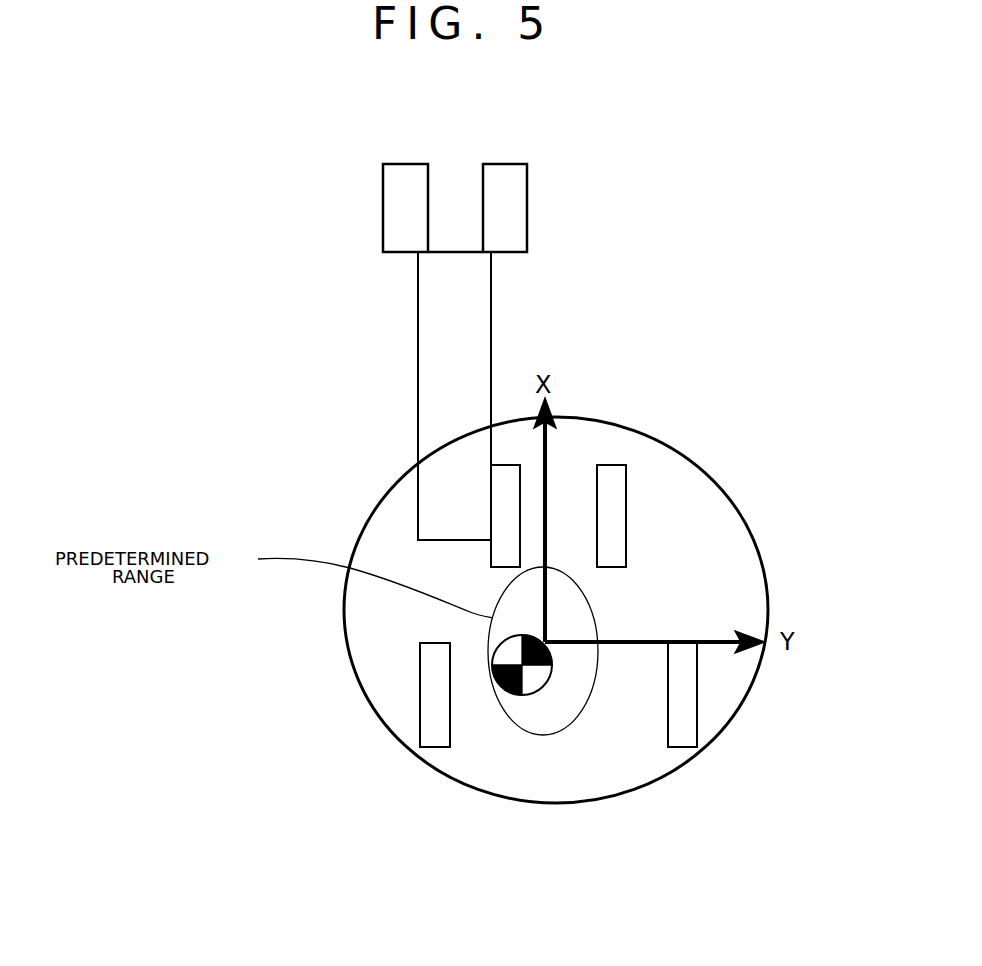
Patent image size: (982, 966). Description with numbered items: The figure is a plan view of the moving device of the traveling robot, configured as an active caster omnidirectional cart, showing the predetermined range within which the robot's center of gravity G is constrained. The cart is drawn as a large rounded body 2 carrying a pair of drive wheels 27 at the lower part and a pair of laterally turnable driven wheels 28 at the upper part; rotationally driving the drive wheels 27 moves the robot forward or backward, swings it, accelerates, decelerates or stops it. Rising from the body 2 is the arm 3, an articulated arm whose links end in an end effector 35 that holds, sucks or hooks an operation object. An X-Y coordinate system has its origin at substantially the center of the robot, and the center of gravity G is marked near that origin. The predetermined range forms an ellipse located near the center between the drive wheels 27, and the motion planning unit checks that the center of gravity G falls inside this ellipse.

The robot body 2 is at (748, 592).
The arm 3 is at (432, 305).
The drive wheels 27 is at (432, 735).
The driven wheels 28 is at (505, 520).
The end effector 35 is at (512, 203).
The center of gravity G is at (537, 672).